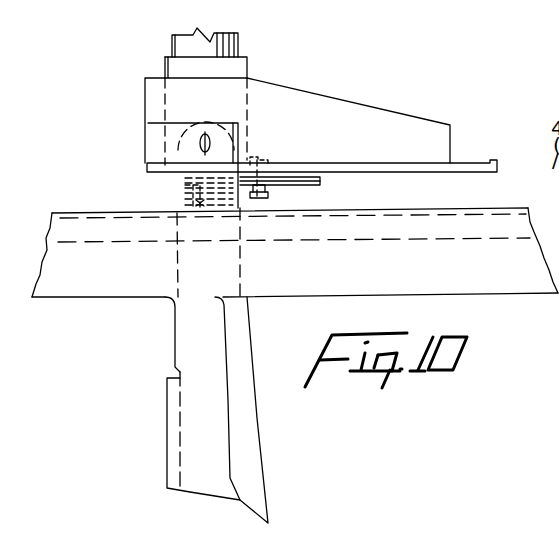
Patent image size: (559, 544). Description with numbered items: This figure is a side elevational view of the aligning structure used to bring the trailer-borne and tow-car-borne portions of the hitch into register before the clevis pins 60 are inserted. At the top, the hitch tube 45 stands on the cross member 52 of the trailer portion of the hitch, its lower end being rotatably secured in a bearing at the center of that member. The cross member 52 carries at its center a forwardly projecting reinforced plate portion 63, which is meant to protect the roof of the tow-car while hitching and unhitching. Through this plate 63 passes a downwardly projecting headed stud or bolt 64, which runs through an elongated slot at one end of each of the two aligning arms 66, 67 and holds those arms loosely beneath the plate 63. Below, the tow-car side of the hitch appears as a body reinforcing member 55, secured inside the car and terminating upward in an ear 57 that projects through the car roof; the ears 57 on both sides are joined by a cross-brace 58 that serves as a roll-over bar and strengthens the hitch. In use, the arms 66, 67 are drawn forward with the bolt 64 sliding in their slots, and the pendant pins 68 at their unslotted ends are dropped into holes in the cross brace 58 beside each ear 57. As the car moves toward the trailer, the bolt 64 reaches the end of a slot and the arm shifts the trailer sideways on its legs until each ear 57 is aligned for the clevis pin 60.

The hitch tube 45 is at (240, 42).
The cross member 52 is at (370, 130).
The tow-car body reinforcing member 55 is at (243, 430).
The ear 57 is at (217, 110).
The cross-brace 58 is at (182, 197).
The clevis pin 60 is at (200, 147).
The reinforced plate portion 63 is at (470, 168).
The headed stud or bolt 64 is at (270, 155).
The aligning arm 66 is at (325, 180).
The aligning arm 67 is at (272, 194).
The pendant pin 68 is at (178, 214).